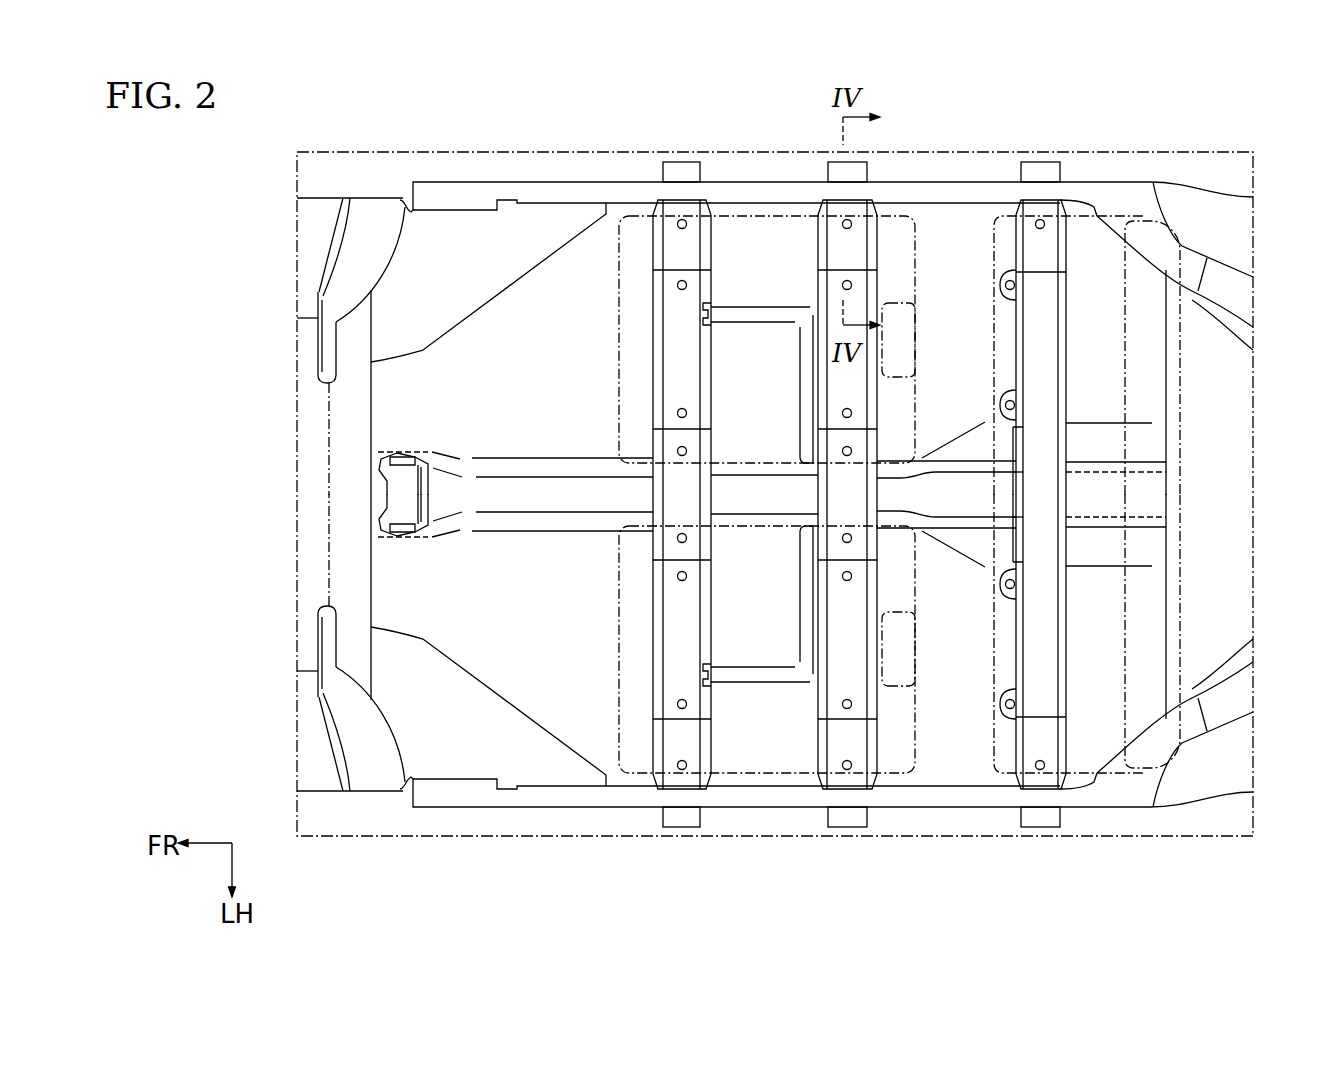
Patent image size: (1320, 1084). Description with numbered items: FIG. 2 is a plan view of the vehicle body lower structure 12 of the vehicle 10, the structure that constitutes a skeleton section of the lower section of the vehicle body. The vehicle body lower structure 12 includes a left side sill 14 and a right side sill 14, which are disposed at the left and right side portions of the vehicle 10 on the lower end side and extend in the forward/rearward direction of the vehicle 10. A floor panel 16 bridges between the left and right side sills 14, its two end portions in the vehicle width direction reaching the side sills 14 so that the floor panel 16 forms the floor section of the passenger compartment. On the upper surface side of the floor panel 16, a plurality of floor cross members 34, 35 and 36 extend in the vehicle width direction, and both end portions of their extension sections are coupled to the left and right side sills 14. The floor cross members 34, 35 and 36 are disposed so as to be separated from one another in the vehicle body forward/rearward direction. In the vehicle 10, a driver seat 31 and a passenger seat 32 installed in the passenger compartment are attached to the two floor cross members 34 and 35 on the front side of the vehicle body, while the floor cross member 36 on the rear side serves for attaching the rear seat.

The vehicle 10 is at (528, 146).
The vehicle body lower structure 12 is at (746, 173).
The side sill 14 is at (931, 181).
The floor panel 16 is at (422, 394).
The driver seat 31 is at (618, 346).
The passenger seat 32 is at (618, 578).
The floor cross member 34 is at (647, 630).
The floor cross member 35 is at (813, 611).
The floor cross member 36 is at (1070, 596).